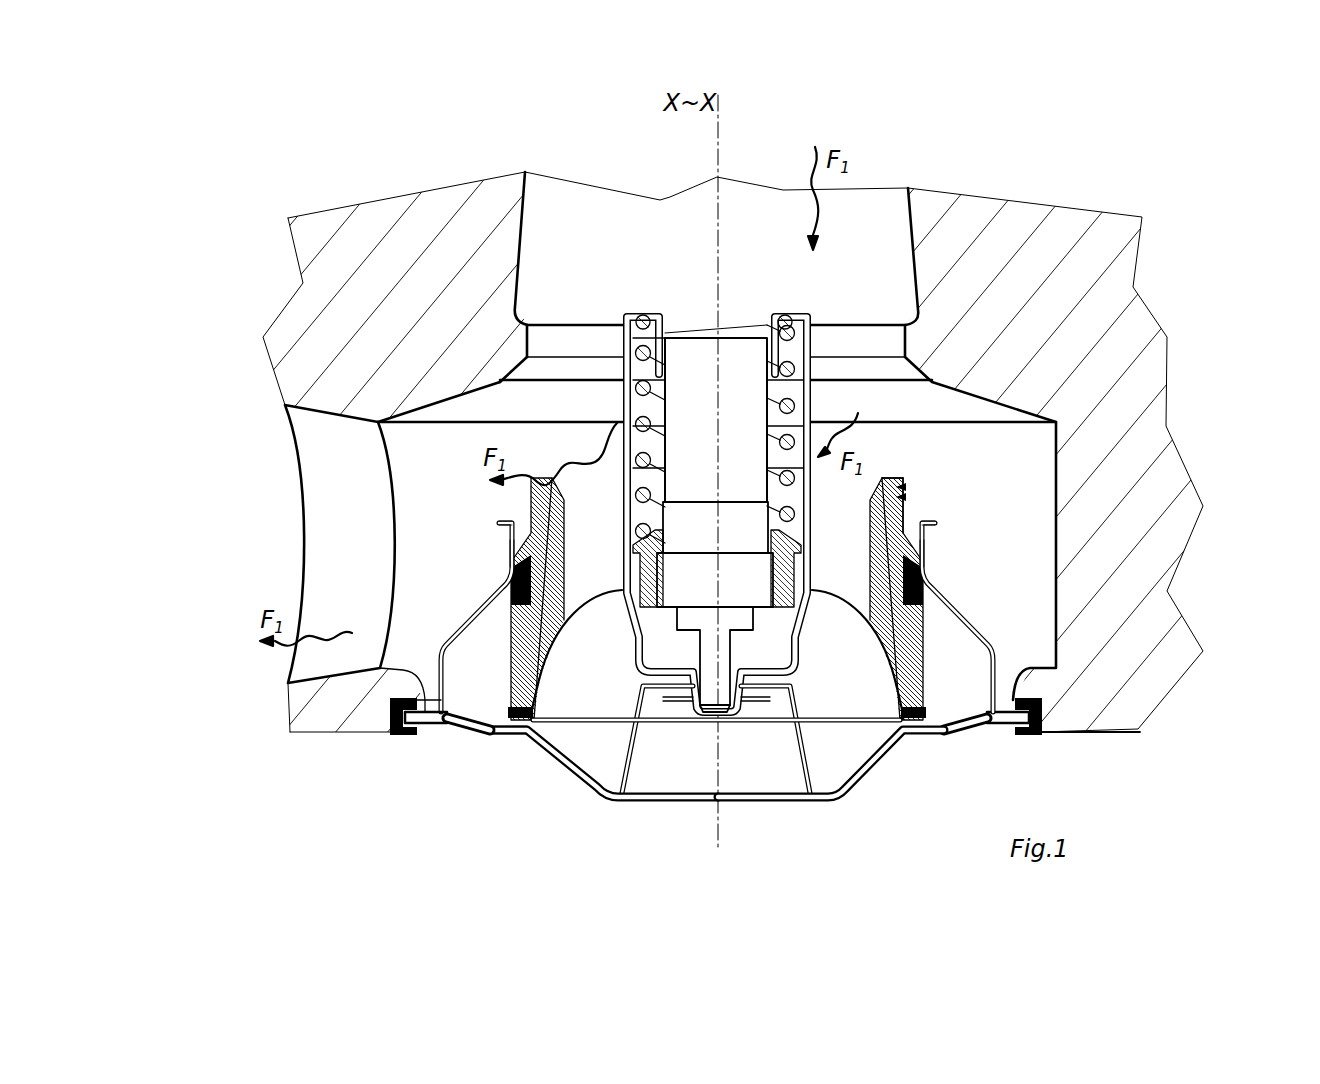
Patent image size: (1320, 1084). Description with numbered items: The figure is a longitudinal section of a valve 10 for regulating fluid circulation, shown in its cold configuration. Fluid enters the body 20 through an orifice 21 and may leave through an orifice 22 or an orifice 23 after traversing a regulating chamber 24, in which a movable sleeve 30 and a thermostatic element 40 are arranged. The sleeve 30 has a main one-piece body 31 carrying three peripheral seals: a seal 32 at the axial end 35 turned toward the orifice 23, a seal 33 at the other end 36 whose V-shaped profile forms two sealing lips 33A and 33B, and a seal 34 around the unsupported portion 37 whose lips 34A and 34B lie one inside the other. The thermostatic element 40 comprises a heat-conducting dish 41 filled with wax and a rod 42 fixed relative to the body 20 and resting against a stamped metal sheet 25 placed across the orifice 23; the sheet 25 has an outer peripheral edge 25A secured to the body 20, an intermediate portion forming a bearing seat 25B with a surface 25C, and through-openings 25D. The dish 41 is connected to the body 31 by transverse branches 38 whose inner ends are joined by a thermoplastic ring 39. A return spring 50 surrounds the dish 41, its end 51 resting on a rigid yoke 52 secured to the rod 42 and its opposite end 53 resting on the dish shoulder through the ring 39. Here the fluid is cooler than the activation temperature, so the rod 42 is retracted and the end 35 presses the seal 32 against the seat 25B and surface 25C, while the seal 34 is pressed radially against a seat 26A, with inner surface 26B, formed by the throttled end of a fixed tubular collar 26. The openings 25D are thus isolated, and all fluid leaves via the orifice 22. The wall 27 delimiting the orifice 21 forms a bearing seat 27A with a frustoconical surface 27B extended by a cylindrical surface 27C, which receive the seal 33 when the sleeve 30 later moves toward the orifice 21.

The valve 10 is at (274, 736).
The body 20 is at (280, 305).
The orifice 21 is at (716, 343).
The orifice 22 is at (340, 544).
The orifice 23 is at (450, 707).
The regulating chamber 24 is at (717, 440).
The stamped metal sheet 25 is at (573, 786).
The outer peripheral edge 25A is at (405, 703).
The bearing seat 25B is at (512, 725).
The surface 25C is at (500, 713).
The through-openings 25D is at (493, 707).
The tubular collar 26 is at (464, 616).
The seat 26A is at (510, 555).
The inner surface 26B is at (510, 512).
The wall 27 is at (436, 450).
The bearing seat 27A is at (528, 342).
The frustoconical surface 27B is at (514, 378).
The cylindrical surface 27C is at (545, 330).
The movable sleeve 30 is at (500, 652).
The main one-piece body 31 is at (718, 893).
The seal 32 is at (913, 735).
The seal 33 is at (1030, 360).
The sealing lip 33A is at (902, 495).
The sealing lip 33B is at (912, 500).
The seal 34 is at (1056, 612).
The sealing lip 34A is at (935, 526).
The sealing lip 34B is at (926, 572).
The axial end 35 is at (655, 700).
The end 36 is at (688, 692).
The unsupported portion 37 is at (668, 703).
The transverse branches 38 is at (1045, 665).
The ring 39 is at (780, 640).
The thermostatic element 40 is at (727, 318).
The heat-conducting dish 41 is at (717, 445).
The rod 42 is at (735, 700).
The return spring 50 is at (633, 393).
The end 51 is at (690, 330).
The rigid yoke 52 is at (632, 310).
The end 53 is at (820, 650).